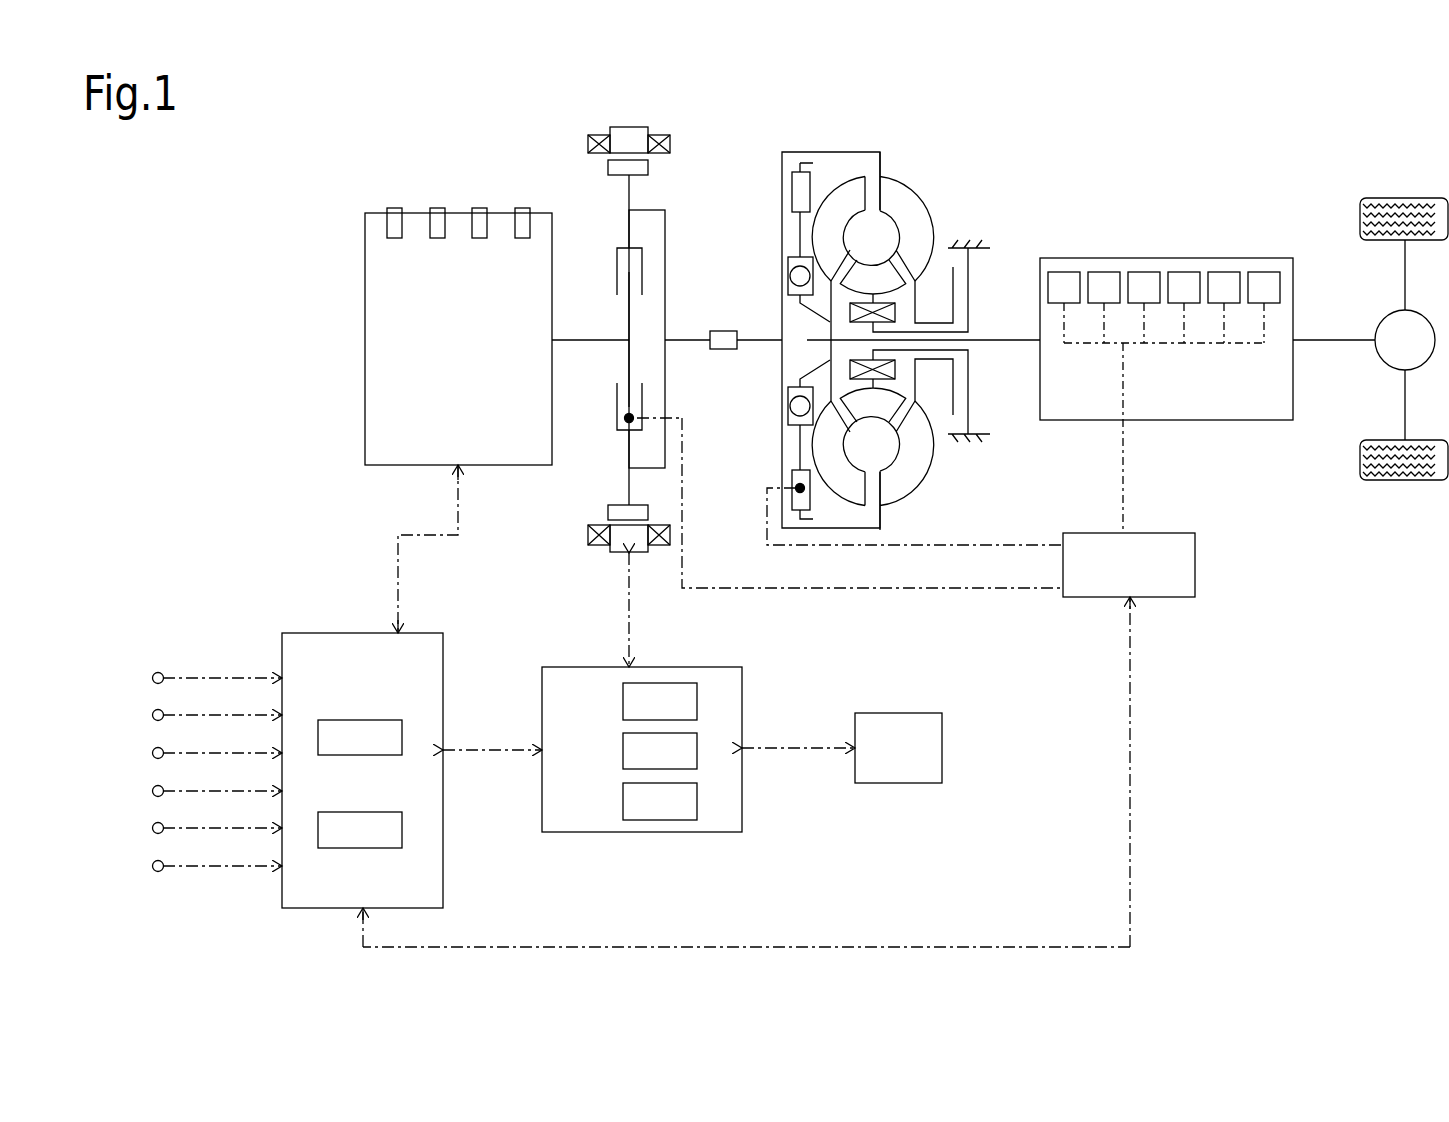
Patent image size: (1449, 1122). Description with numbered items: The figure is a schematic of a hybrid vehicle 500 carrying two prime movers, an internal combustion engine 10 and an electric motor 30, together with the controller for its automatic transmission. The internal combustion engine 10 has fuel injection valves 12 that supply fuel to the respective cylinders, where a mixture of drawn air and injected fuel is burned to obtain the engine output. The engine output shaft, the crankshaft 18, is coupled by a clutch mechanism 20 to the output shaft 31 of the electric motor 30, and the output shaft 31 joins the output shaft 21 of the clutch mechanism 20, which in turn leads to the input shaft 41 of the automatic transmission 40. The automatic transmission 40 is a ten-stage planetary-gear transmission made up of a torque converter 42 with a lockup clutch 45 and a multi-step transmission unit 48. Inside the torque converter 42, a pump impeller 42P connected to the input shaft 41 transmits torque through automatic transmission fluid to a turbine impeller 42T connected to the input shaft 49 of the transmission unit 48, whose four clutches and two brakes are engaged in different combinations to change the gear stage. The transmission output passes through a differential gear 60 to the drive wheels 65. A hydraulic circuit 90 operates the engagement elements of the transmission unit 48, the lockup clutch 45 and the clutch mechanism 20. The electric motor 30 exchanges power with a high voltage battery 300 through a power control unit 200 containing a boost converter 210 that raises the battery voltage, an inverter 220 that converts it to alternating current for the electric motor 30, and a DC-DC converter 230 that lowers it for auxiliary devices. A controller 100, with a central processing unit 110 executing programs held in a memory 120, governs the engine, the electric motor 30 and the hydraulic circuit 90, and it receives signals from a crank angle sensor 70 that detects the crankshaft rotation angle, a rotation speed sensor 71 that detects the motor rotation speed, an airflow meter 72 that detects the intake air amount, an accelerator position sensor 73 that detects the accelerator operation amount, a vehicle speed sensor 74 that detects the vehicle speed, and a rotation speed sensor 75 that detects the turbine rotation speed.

The internal combustion engine 10 is at (365, 252).
The fuel injection valves 12 is at (395, 208).
The crankshaft 18 is at (578, 340).
The clutch mechanism 20 is at (617, 275).
The output shaft of the clutch mechanism 21 is at (665, 228).
The electric motor 30 is at (629, 127).
The output shaft of the electric motor 31 is at (686, 338).
The automatic transmission 40 is at (993, 205).
The input shaft of the automatic transmission 41 is at (762, 338).
The torque converter 42 is at (858, 152).
The pump impeller 42P is at (932, 458).
The turbine impeller 42T is at (805, 440).
The lockup clutch 45 is at (792, 190).
The transmission unit 48 is at (1105, 258).
The input shaft of the transmission unit 49 is at (1010, 338).
The differential gear 60 is at (1432, 316).
The drive wheels 65 is at (1360, 214).
The crank angle sensor 70 is at (152, 678).
The rotation speed sensor 71 is at (152, 715).
The airflow meter 72 is at (152, 753).
The accelerator position sensor 73 is at (152, 791).
The vehicle speed sensor 74 is at (152, 828).
The rotation speed sensor 75 is at (152, 866).
The hydraulic circuit 90 is at (1195, 565).
The controller 100 is at (310, 633).
The central processing unit 110 is at (358, 720).
The memory 120 is at (358, 812).
The power control unit 200 is at (565, 667).
The boost converter 210 is at (623, 702).
The inverter 220 is at (623, 752).
The DC-DC converter 230 is at (623, 802).
The high voltage battery 300 is at (907, 713).
The vehicle 500 is at (1221, 170).